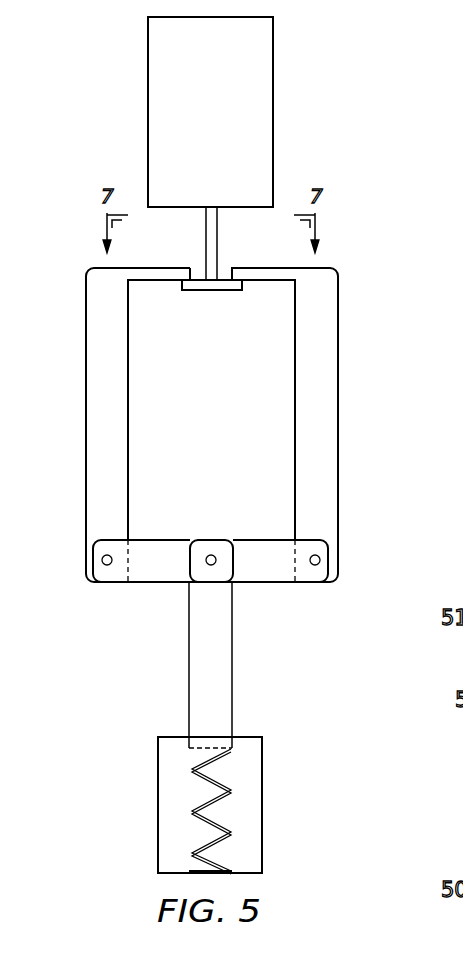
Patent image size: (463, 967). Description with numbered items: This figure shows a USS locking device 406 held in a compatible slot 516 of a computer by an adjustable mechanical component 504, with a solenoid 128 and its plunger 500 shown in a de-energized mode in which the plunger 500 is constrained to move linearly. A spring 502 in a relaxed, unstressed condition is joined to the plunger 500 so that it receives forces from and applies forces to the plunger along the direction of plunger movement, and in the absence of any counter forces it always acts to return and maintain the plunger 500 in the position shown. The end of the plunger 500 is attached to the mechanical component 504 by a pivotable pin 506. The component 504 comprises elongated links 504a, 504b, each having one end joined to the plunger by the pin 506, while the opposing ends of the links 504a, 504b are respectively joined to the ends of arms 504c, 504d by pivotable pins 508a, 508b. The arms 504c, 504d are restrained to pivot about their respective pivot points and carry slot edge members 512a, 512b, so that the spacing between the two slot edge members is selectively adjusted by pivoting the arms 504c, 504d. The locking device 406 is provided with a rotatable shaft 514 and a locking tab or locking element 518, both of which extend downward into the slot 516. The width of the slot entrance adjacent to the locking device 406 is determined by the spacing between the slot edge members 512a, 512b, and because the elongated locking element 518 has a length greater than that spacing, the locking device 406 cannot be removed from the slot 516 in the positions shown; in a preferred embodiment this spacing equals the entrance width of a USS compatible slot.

The USS locking device 406 is at (231, 121).
The rotatable shaft 514 is at (206, 240).
The adjustable mechanical component 504 is at (381, 285).
The elongated link 504a is at (150, 585).
The elongated link 504b is at (266, 585).
The arm 504c is at (86, 428).
The arm 504d is at (338, 428).
The slot edge member 512a is at (152, 283).
The slot edge member 512b is at (270, 283).
The locking element 518 is at (200, 292).
The slot 516 is at (231, 428).
The pivotable pin 506 is at (211, 554).
The pivotable pin 508a is at (101, 560).
The pivotable pin 508b is at (321, 560).
The plunger 500 is at (189, 669).
The solenoid 128 is at (158, 803).
The spring 502 is at (223, 816).